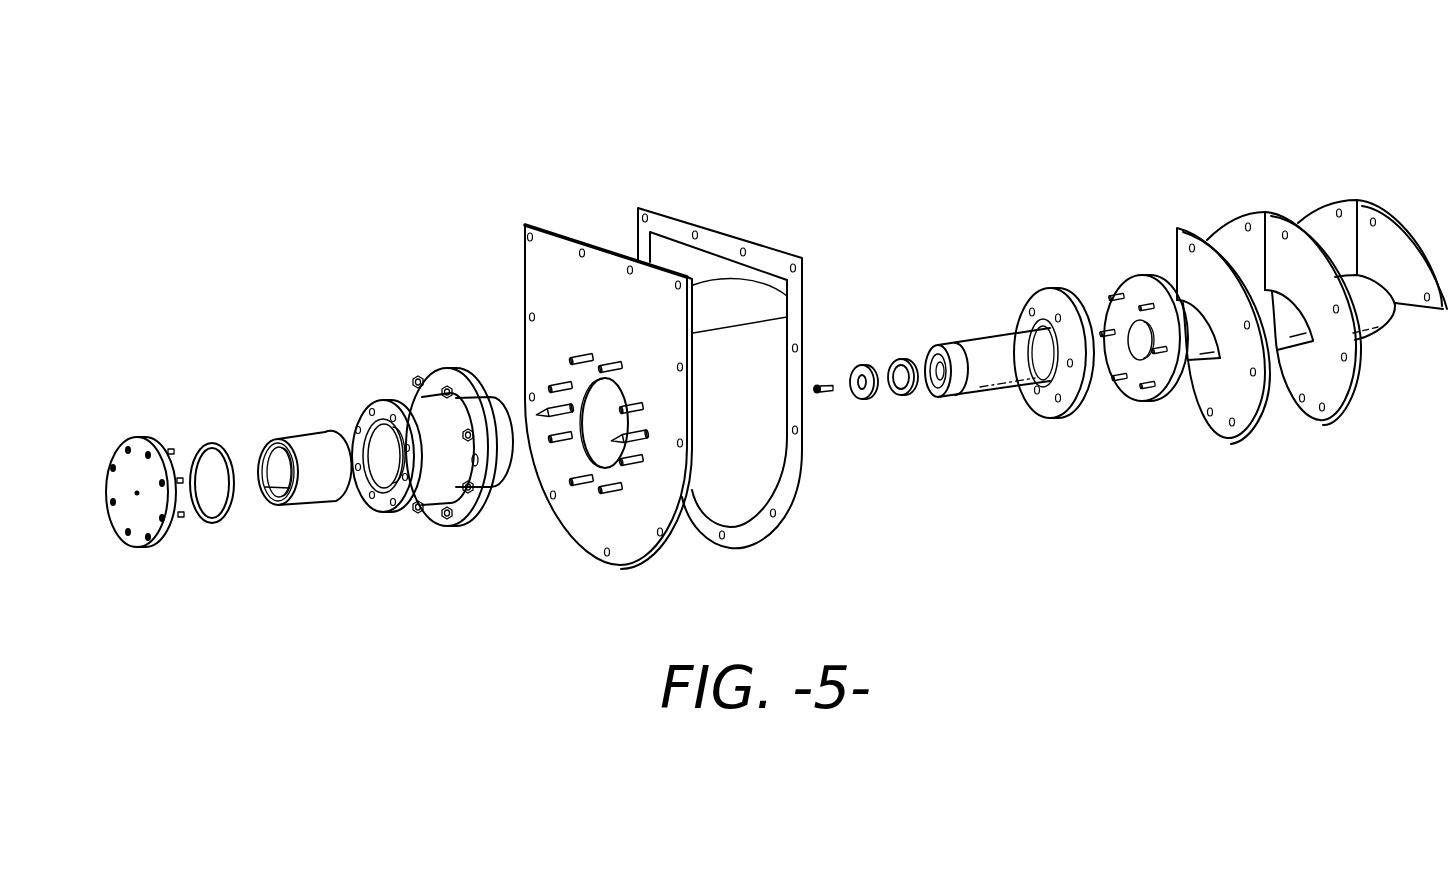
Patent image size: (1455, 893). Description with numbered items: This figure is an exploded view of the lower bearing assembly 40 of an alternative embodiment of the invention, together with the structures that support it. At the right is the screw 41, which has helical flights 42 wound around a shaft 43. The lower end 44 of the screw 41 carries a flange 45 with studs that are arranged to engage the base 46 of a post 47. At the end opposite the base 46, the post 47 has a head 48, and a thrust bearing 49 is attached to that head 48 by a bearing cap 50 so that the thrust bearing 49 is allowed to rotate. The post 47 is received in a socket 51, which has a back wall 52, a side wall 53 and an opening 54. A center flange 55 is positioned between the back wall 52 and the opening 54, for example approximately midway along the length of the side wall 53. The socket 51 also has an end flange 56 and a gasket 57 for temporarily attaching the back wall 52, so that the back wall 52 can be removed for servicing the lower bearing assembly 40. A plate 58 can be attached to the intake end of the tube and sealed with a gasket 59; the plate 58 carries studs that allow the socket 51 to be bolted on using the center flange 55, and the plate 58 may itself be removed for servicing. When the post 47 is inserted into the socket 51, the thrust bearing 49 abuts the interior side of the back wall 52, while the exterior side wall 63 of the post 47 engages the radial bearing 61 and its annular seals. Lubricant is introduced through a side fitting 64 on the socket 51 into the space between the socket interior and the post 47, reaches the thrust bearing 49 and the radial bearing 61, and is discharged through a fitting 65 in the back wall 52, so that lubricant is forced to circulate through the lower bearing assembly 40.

The lower bearing assembly 40 is at (448, 164).
The screw 41 is at (1246, 213).
The helical flights 42 is at (1387, 235).
The shaft 43 is at (1375, 313).
The lower end 44 is at (1202, 347).
The flange 45 is at (1133, 288).
The base 46 is at (1037, 302).
The post 47 is at (988, 399).
The head 48 is at (929, 354).
The thrust bearing 49 is at (897, 402).
The bearing cap 50 is at (865, 400).
The socket 51 is at (383, 393).
The back wall 52 is at (128, 460).
The side wall 53 is at (438, 477).
The opening 54 is at (478, 395).
The center flange 55 is at (486, 466).
The end flange 56 is at (367, 408).
The gasket 57 is at (226, 518).
The plate 58 is at (548, 247).
The gasket 59 is at (667, 225).
The radial bearing 61 is at (317, 488).
The exterior side wall 63 is at (997, 345).
The fitting 64 is at (405, 407).
The fitting 65 is at (137, 494).